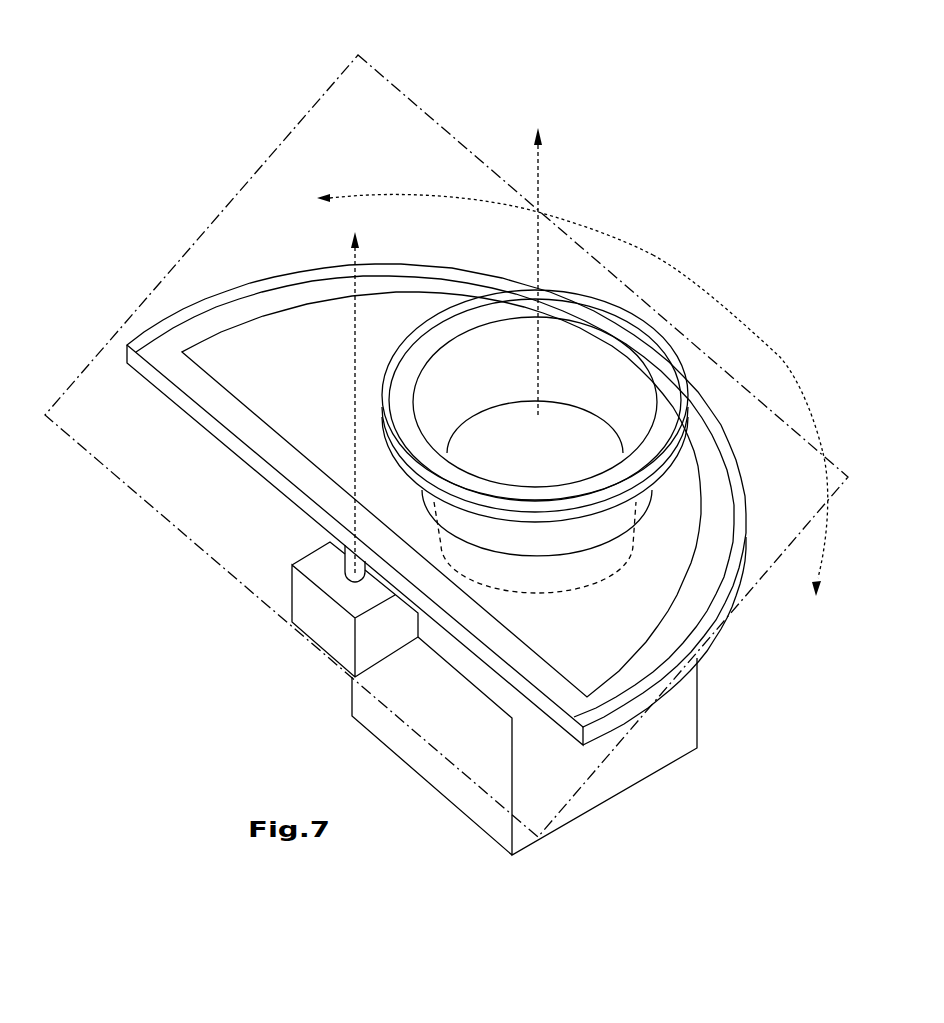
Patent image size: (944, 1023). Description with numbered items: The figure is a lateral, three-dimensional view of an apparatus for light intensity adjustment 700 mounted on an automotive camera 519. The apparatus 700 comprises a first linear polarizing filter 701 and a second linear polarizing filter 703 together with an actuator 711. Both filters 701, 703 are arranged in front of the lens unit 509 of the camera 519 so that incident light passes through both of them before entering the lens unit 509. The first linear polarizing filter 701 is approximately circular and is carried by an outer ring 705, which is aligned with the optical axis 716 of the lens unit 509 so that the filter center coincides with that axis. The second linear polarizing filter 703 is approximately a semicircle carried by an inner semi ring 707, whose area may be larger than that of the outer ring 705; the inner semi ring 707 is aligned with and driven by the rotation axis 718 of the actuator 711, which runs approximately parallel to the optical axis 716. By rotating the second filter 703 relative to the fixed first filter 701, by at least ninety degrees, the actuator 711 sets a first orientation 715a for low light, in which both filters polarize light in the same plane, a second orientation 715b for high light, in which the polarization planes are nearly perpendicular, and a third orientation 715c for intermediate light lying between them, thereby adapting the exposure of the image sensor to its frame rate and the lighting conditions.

The apparatus for light intensity adjustment 700 is at (346, 71).
The first linear polarizing filter 701 is at (612, 390).
The second linear polarizing filter 703 is at (321, 376).
The outer ring 705 is at (690, 395).
The inner semi ring 707 is at (140, 368).
The actuator 711 is at (327, 618).
The first orientation 715a is at (818, 590).
The second orientation 715b is at (336, 196).
The third orientation 715c is at (655, 253).
The optical axis 716 is at (538, 173).
The rotation axis 718 is at (352, 256).
The lens unit 509 is at (584, 540).
The automotive camera 519 is at (712, 725).